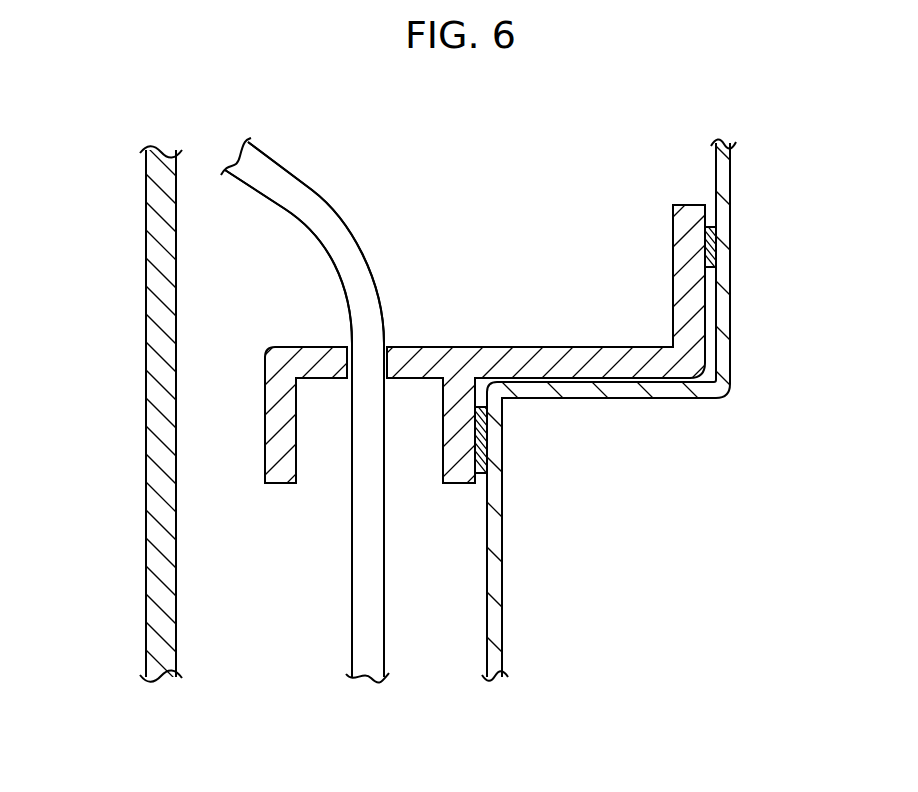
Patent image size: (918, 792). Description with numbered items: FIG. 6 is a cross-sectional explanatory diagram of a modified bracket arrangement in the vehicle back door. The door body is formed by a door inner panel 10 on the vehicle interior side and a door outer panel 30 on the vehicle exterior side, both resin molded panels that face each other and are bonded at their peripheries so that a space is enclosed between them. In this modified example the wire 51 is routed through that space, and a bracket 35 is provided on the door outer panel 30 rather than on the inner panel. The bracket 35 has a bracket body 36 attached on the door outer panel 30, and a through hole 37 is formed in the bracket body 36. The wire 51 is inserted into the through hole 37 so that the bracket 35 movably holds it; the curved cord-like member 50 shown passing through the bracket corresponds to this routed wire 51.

The door inner panel 10 is at (145, 352).
The door outer panel 30 is at (724, 287).
The bracket 35 is at (578, 347).
The bracket body 36 is at (491, 347).
The through hole 37 is at (380, 352).
The arm 50 is at (348, 221).
The wire 51 is at (302, 218).